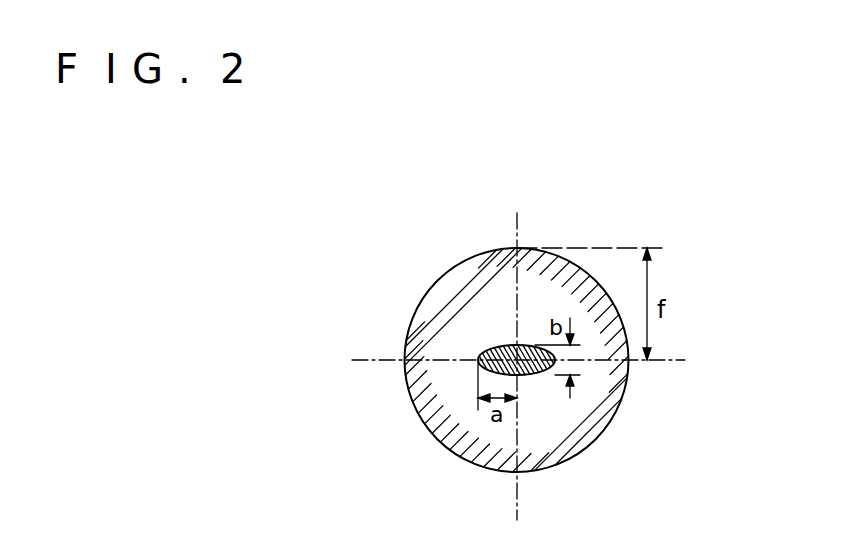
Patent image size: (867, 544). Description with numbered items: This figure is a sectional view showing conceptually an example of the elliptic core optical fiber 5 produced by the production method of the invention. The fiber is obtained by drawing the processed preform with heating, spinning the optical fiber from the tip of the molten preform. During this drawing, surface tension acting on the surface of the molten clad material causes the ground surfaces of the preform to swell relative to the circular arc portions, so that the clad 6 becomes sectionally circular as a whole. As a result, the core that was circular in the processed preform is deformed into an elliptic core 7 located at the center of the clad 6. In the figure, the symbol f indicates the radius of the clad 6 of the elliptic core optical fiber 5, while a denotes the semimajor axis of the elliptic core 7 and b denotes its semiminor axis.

The elliptic core optical fiber 5 is at (418, 419).
The clad 6 is at (465, 292).
The elliptic core 7 is at (487, 348).